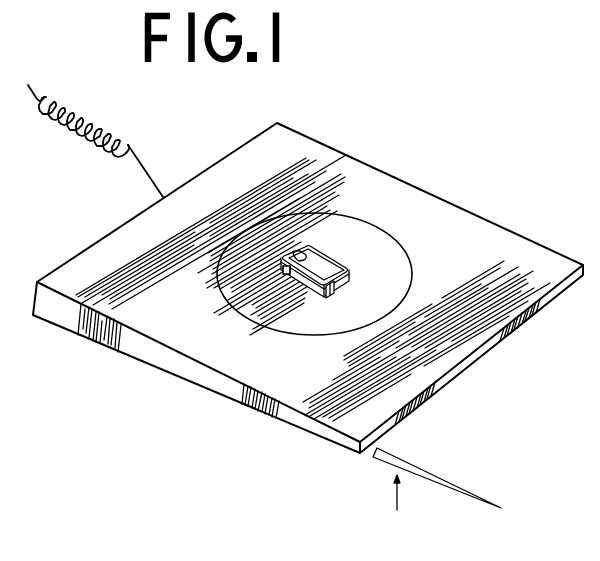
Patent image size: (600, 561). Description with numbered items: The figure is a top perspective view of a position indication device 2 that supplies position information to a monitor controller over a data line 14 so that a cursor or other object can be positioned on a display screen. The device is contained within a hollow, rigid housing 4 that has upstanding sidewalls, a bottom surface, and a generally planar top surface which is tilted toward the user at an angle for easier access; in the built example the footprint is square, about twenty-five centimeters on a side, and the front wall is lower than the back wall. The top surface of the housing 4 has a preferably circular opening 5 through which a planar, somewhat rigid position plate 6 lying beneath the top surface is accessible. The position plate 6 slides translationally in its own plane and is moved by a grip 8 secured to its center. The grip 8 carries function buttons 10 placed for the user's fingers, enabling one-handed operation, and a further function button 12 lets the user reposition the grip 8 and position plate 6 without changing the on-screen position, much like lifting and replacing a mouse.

The position indication device 2 is at (347, 151).
The housing 4 is at (387, 173).
The opening 5 is at (369, 223).
The position plate 6 is at (380, 302).
The grip 8 is at (296, 259).
The function buttons 10 is at (297, 251).
The function button 12 is at (292, 278).
The data line 14 is at (142, 176).